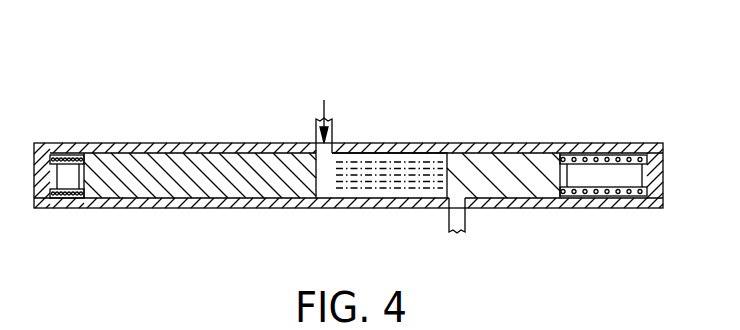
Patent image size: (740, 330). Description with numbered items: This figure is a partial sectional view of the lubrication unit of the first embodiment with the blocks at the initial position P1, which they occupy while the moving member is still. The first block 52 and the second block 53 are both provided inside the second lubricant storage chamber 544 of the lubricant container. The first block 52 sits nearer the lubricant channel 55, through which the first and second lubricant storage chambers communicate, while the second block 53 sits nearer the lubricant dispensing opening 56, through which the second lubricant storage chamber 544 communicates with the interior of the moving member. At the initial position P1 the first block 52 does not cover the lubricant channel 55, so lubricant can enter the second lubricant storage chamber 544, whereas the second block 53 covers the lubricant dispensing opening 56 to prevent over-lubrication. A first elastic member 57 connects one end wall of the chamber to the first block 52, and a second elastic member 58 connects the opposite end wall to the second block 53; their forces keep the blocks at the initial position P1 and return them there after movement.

The first block 52 is at (165, 170).
The second block 53 is at (527, 168).
The second lubricant storage chamber 544 is at (391, 170).
The lubricant channel 55 is at (315, 128).
The lubricant dispensing opening 56 is at (462, 220).
The first elastic member 57 is at (65, 158).
The second elastic member 58 is at (600, 158).
The initial position P1 is at (220, 96).